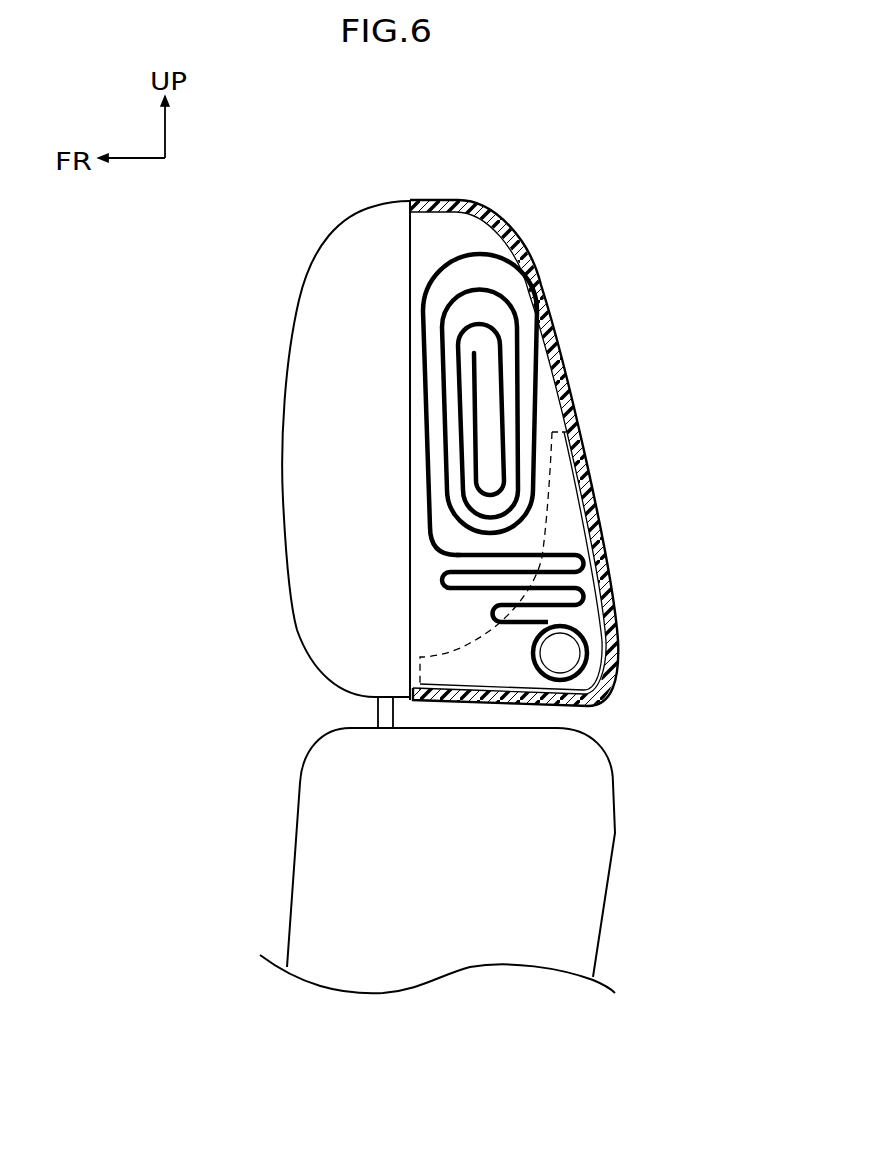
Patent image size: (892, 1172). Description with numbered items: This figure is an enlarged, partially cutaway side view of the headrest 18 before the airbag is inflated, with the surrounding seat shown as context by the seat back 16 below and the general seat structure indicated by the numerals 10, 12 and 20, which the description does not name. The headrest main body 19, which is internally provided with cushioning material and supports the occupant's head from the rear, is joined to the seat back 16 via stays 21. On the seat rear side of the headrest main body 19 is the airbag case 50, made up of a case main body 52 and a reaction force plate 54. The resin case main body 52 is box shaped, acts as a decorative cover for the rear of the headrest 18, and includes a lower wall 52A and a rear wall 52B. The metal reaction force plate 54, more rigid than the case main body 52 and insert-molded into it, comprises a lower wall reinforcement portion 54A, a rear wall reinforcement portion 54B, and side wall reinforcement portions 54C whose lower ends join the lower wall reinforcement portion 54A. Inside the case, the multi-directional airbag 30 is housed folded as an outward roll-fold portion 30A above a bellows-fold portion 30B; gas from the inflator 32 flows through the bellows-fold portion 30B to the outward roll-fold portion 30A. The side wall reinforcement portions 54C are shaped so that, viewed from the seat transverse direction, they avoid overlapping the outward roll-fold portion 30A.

The vehicle seat 10 is at (466, 564).
The seat back 12 is at (511, 860).
The seat back 16 is at (617, 847).
The headrest 18 is at (465, 476).
The headrest main body 19 is at (284, 398).
The headrest 20 is at (466, 476).
The stays 21 is at (377, 704).
The multi-directional airbag 30 is at (591, 379).
The outward roll-fold portion 30A is at (459, 251).
The bellows-fold portion 30B is at (578, 561).
The inflator 32 is at (567, 653).
The airbag case 50 is at (465, 508).
The case main body 52 is at (570, 508).
The lower wall 52A is at (502, 706).
The rear wall 52B is at (613, 572).
The reaction force plate 54 is at (452, 615).
The lower wall reinforcement portion 54A is at (427, 702).
The rear wall reinforcement portion 54B is at (618, 610).
The side wall reinforcement portions 54C is at (413, 668).